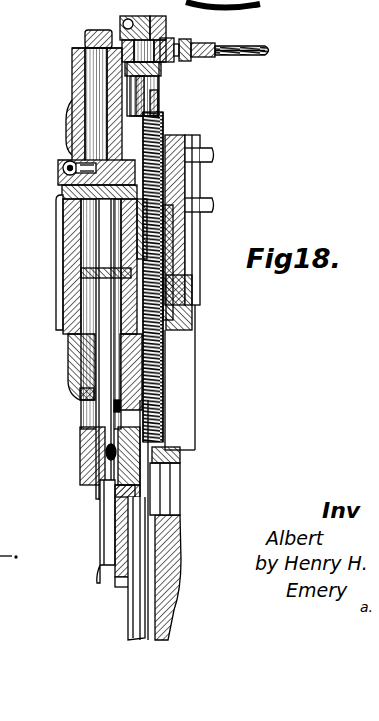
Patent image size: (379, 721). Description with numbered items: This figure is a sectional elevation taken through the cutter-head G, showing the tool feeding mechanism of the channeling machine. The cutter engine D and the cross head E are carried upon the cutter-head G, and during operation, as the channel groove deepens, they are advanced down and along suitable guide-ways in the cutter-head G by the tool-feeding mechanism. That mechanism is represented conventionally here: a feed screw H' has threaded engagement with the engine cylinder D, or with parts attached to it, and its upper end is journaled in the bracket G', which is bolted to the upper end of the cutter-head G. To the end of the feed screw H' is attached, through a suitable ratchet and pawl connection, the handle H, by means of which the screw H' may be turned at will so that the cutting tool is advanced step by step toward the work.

The cutter engine D is at (59, 214).
The bracket G' is at (169, 66).
The handle H is at (219, 62).
The feed screw H' is at (183, 277).
The cross head E is at (117, 514).
The cutter-head G is at (186, 543).